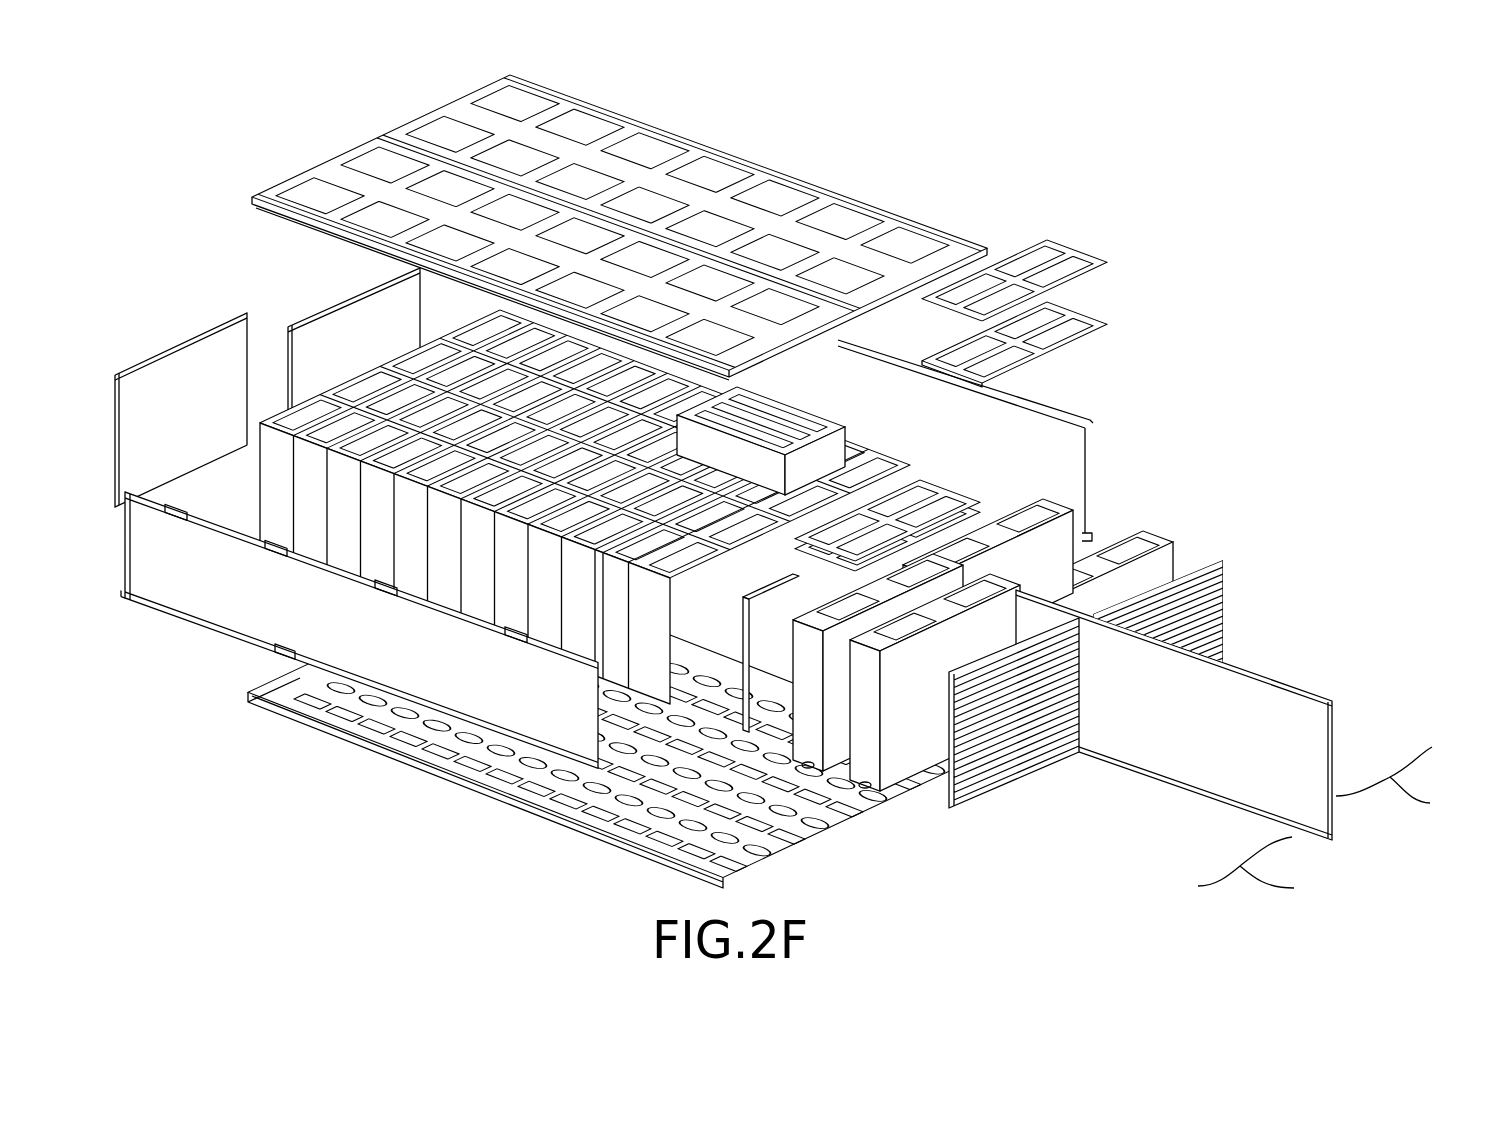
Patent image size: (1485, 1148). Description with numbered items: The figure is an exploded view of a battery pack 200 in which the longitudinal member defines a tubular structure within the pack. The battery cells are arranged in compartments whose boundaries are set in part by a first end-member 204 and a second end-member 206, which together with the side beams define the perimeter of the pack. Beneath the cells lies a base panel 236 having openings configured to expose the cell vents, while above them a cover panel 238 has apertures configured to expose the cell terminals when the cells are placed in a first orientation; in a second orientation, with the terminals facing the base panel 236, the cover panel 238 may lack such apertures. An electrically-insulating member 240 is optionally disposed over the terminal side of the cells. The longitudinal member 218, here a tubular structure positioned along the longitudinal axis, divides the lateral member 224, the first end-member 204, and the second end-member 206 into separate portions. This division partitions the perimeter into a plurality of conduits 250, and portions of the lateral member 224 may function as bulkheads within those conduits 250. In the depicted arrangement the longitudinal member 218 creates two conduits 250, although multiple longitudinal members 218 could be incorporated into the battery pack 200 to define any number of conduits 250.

The battery pack 200 is at (1316, 377).
The first end-member 204 is at (146, 363).
The second end-member 206 is at (1236, 588).
The longitudinal member 218 is at (1297, 672).
The lateral member 224 is at (745, 615).
The base panel 236 is at (340, 734).
The cover panel 238 is at (470, 93).
The electrically-insulating member 240 is at (1103, 335).
The conduit 250 is at (1334, 836).